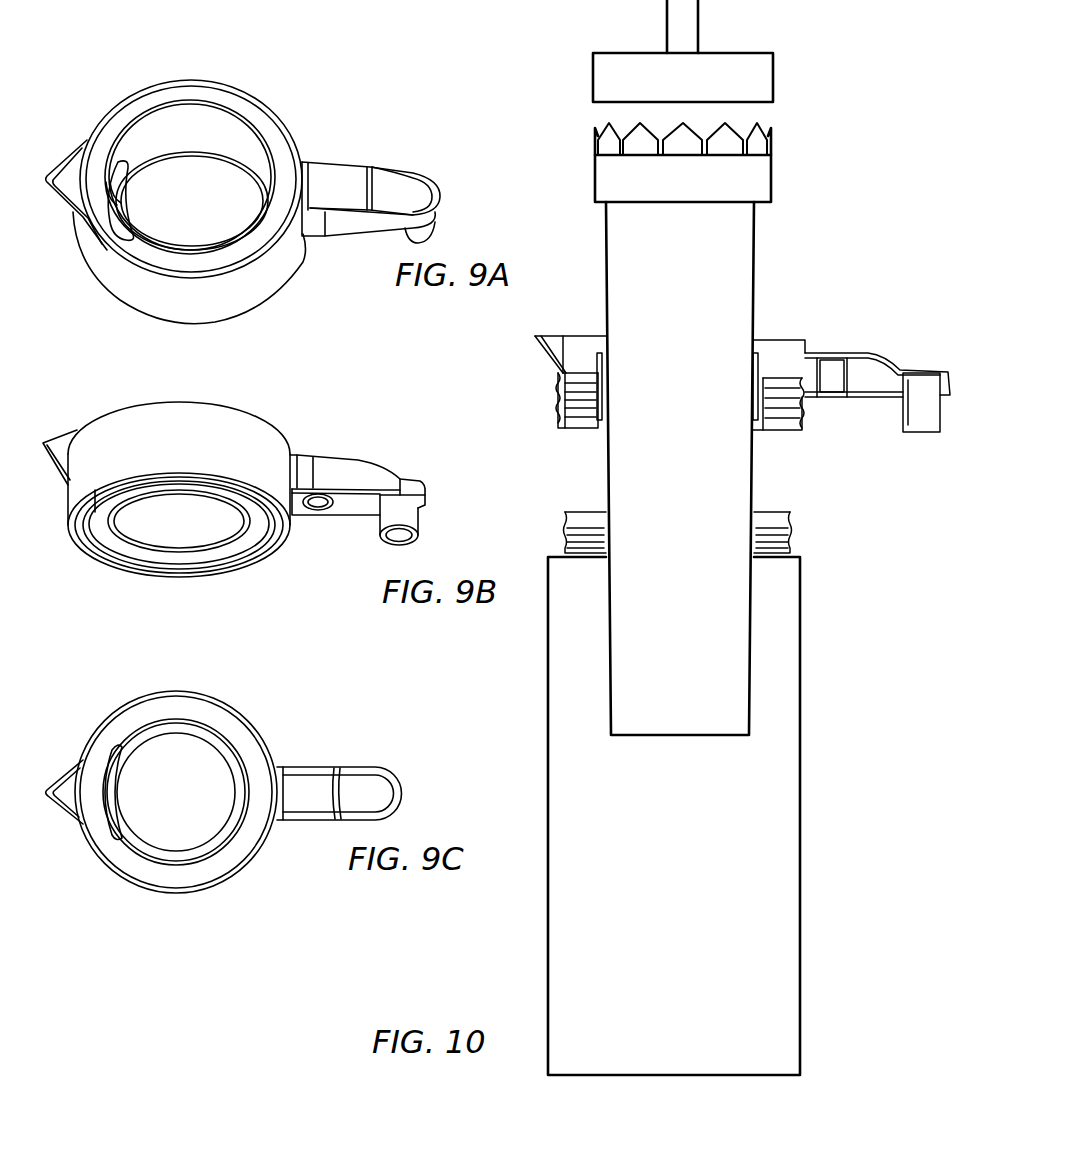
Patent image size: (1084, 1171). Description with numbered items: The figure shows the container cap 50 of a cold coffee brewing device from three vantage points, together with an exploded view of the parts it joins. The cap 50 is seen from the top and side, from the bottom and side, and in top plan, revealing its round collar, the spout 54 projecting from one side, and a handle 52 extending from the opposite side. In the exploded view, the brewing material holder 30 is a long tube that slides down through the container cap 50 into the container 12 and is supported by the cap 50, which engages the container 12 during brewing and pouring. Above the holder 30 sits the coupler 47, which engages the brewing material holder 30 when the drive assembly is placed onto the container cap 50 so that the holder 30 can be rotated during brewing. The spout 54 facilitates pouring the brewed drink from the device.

In FIG. 10, the container 12 is at (590, 953).
In FIG. 10, the brewing material holder 30 is at (671, 508).
In FIG. 10, the coupler 47 is at (712, 68).
In FIG. 9A, the container cap 50 is at (300, 78).
In FIG. 9B, the container cap 50 is at (278, 389).
In FIG. 9C, the container cap 50 is at (276, 710).
In FIG. 10, the container cap 50 is at (782, 350).
In FIG. 9A, the handle 52 is at (333, 180).
In FIG. 9A, the spout 54 is at (66, 178).
In FIG. 9B, the spout 54 is at (60, 450).
In FIG. 9C, the spout 54 is at (68, 788).